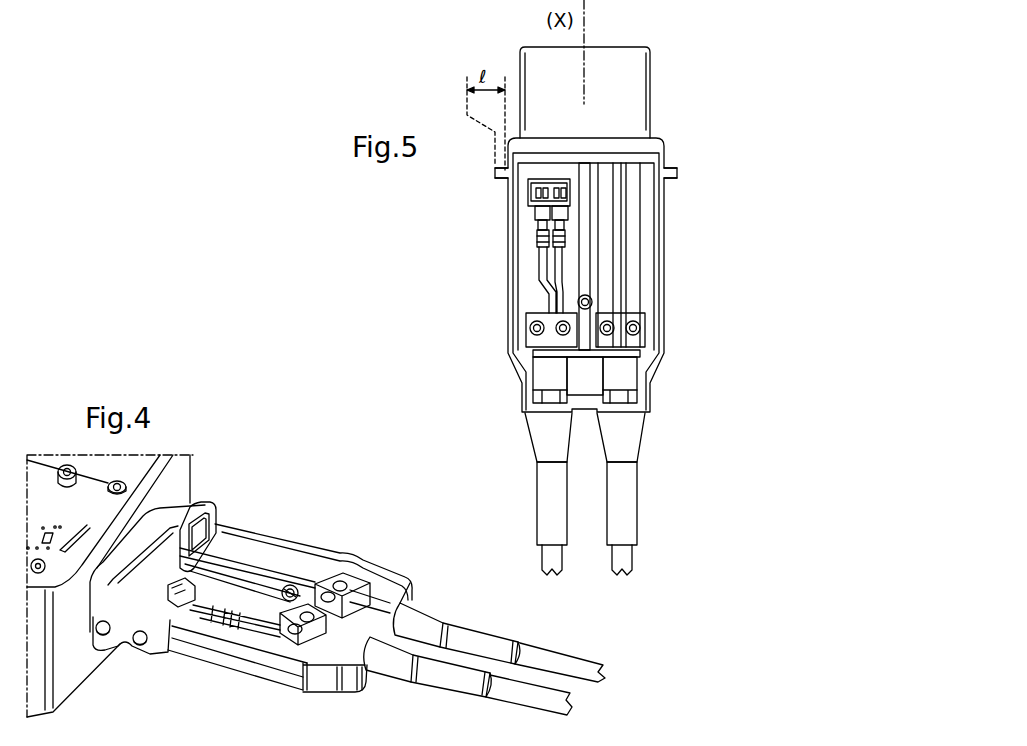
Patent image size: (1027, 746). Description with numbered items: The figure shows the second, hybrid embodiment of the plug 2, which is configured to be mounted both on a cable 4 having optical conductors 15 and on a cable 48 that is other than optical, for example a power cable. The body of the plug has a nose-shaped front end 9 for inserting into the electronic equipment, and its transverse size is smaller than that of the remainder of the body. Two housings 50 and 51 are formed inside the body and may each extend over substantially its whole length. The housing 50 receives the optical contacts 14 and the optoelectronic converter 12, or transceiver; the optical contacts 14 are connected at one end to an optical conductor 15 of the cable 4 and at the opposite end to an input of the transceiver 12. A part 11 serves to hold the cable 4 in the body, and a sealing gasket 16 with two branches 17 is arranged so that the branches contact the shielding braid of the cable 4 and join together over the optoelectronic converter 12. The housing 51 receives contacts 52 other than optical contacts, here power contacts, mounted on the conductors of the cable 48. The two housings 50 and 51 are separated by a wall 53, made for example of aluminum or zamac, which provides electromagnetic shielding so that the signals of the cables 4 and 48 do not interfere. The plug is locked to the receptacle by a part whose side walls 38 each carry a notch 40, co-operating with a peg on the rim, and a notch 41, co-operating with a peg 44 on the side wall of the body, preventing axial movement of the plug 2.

In FIG. 4, the plug 2 is at (328, 683).
In FIG. 5, the cable 4 is at (550, 507).
In FIG. 4, the cable 4 is at (503, 692).
In FIG. 5, the front end 9 is at (632, 60).
In FIG. 5, the part 11 is at (635, 318).
In FIG. 5, the optoelectronic converter 12 is at (543, 173).
In FIG. 5, the optical contacts 14 is at (558, 223).
In FIG. 5, the optical conductor 15 is at (540, 269).
In FIG. 5, the sealing gasket 16 is at (657, 334).
In FIG. 5, the branches 17 is at (657, 267).
In FIG. 4, the branches 17 is at (248, 552).
In FIG. 4, the side walls 38 is at (142, 672).
In FIG. 4, the notch 40 is at (108, 630).
In FIG. 4, the notch 41 is at (130, 636).
In FIG. 5, the peg 44 is at (666, 157).
In FIG. 5, the cable 48 is at (627, 513).
In FIG. 4, the cable 48 is at (557, 660).
In FIG. 5, the housing 50 is at (528, 298).
In FIG. 4, the housing 50 is at (270, 613).
In FIG. 5, the housing 51 is at (640, 242).
In FIG. 4, the housing 51 is at (307, 565).
In FIG. 5, the contacts 52 is at (617, 212).
In FIG. 5, the wall 53 is at (585, 182).
In FIG. 4, the wall 53 is at (255, 597).